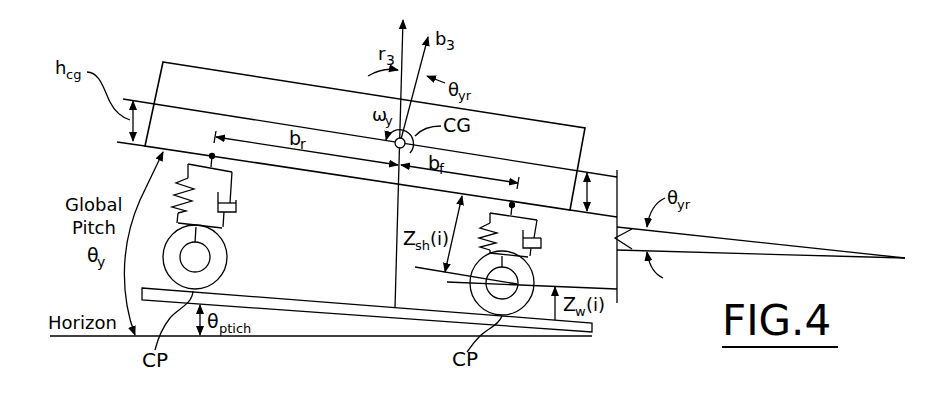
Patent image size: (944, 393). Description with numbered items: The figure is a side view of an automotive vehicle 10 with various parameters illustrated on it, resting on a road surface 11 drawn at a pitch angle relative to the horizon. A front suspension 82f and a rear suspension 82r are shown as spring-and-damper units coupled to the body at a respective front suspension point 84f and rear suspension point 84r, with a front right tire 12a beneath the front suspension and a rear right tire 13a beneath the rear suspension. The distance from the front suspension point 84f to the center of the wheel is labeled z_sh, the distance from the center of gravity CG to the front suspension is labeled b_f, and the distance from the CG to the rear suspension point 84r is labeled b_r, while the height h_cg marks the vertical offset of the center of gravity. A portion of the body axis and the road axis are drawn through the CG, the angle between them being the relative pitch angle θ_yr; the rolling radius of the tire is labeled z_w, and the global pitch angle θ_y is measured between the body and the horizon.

The automotive vehicle 10 is at (516, 117).
The road surface 11 is at (293, 300).
The front right tire 12a is at (532, 276).
The rear right tire 13a is at (227, 254).
The rear suspension 82r is at (240, 202).
The front suspension 82f is at (543, 238).
The rear suspension point 84r is at (212, 155).
The front suspension point 84f is at (513, 204).